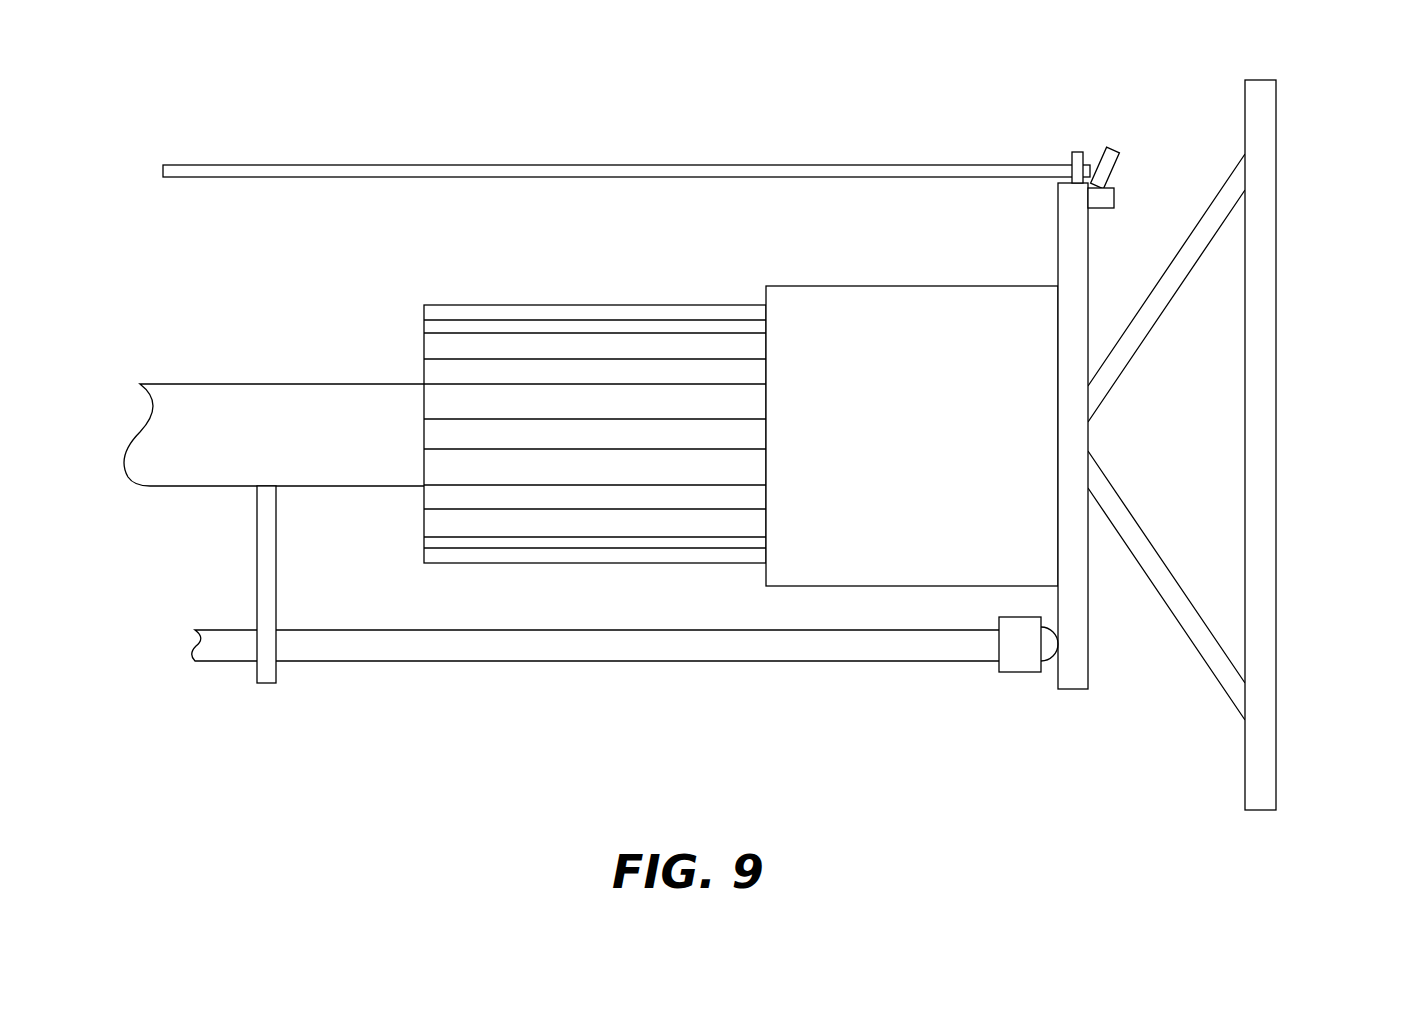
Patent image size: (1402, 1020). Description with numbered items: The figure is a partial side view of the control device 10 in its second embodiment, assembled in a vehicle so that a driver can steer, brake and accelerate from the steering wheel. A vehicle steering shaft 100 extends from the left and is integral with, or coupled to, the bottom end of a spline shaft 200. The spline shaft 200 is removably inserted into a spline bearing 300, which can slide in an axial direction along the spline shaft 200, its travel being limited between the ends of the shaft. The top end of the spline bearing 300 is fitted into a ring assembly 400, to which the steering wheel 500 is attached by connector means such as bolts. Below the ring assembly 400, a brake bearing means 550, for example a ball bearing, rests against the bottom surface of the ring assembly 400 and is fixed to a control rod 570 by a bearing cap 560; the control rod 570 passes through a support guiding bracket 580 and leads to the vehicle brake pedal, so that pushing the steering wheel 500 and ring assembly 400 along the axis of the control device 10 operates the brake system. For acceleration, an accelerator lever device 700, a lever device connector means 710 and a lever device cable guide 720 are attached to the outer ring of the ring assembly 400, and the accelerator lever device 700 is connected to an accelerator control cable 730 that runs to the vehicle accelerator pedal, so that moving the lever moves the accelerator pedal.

The control device 10 is at (1077, 145).
The vehicle steering shaft 100 is at (270, 386).
The spline shaft 200 is at (537, 313).
The spline bearing 300 is at (890, 300).
The ring assembly 400 is at (1067, 237).
The steering wheel 500 is at (1268, 251).
The brake bearing means 550 is at (1048, 652).
The bearing cap 560 is at (1016, 660).
The control rod 570 is at (545, 654).
The support guiding bracket 580 is at (268, 676).
The accelerator lever device 700 is at (1110, 161).
The lever device connector means 710 is at (1107, 200).
The lever device cable guide 720 is at (1072, 158).
The accelerator control cable 730 is at (537, 170).